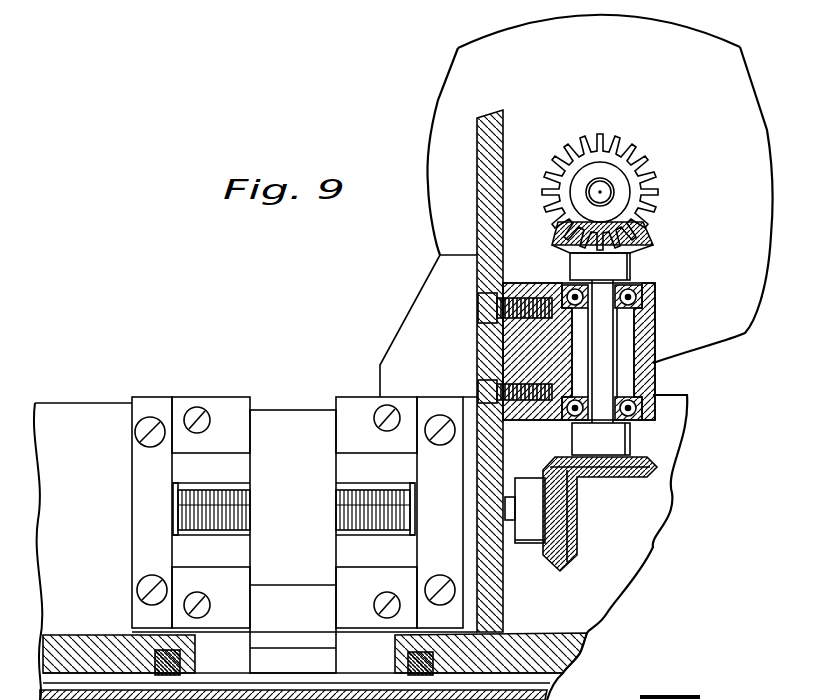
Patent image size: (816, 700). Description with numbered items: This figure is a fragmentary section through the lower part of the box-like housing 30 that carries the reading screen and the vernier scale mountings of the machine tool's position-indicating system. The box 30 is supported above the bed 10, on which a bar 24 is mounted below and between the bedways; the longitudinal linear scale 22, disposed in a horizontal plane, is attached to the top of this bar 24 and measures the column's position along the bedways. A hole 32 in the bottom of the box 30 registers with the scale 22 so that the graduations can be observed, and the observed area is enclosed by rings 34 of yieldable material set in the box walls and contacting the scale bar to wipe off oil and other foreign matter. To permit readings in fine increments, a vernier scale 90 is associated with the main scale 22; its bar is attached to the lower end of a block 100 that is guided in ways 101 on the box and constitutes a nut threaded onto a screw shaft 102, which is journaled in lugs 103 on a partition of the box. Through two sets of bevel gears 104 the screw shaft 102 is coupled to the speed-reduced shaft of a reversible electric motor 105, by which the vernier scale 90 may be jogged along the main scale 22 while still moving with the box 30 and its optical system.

The bed 10 is at (96, 540).
The linear scale 22 is at (228, 674).
The bar 24 is at (552, 697).
The box-like housing 30 is at (580, 648).
The hole 32 is at (194, 649).
The rings 34 is at (407, 658).
The vernier scale 90 is at (298, 664).
The block 100 is at (328, 608).
The ways 101 is at (218, 573).
The screw shaft 102 is at (353, 532).
The lugs 103 is at (133, 549).
The bevel gears 104 is at (660, 227).
The reversible electric motor 105 is at (438, 140).